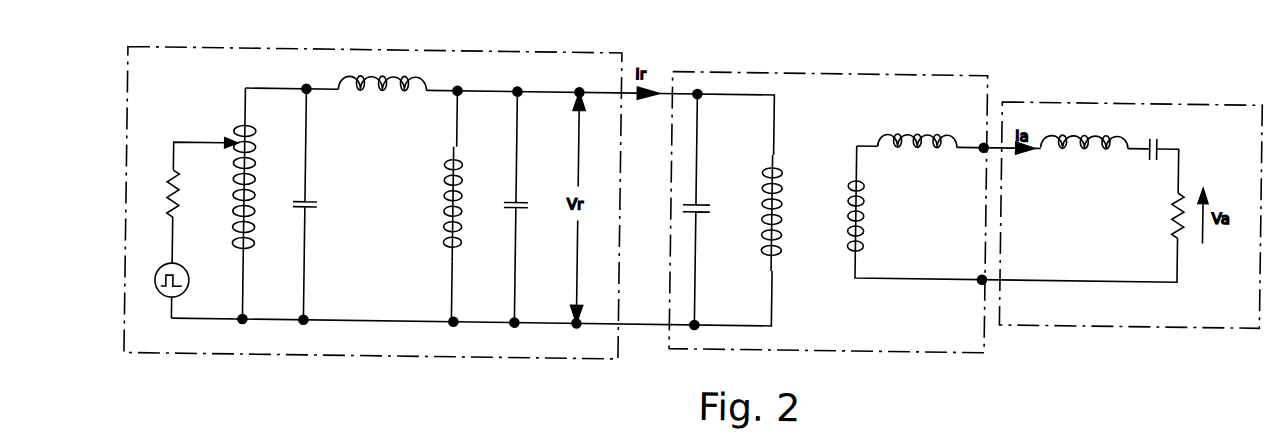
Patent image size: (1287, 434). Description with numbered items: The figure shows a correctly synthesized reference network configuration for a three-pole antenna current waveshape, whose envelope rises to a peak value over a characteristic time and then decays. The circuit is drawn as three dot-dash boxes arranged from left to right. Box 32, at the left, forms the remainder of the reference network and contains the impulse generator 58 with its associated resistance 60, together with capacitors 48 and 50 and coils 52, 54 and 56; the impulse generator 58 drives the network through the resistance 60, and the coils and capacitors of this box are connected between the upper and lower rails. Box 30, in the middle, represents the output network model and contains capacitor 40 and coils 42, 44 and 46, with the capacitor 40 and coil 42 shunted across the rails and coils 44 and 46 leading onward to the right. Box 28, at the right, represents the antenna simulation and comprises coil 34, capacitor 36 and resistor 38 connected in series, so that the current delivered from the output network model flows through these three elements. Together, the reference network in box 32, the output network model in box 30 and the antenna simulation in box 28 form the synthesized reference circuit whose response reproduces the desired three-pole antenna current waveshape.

The box 28 is at (1130, 99).
The box 30 is at (797, 72).
The box 32 is at (383, 55).
The coil 34 is at (1070, 138).
The capacitor 36 is at (1160, 141).
The resistor 38 is at (1172, 212).
The capacitor 40 is at (697, 210).
The coil 42 is at (776, 200).
The coil 44 is at (862, 200).
The coil 46 is at (901, 138).
The capacitor 48 is at (513, 206).
The capacitor 50 is at (317, 205).
The coil 52 is at (446, 200).
The coil 54 is at (390, 84).
The coil 56 is at (255, 185).
The impulse generator 58 is at (191, 286).
The resistance 60 is at (180, 195).